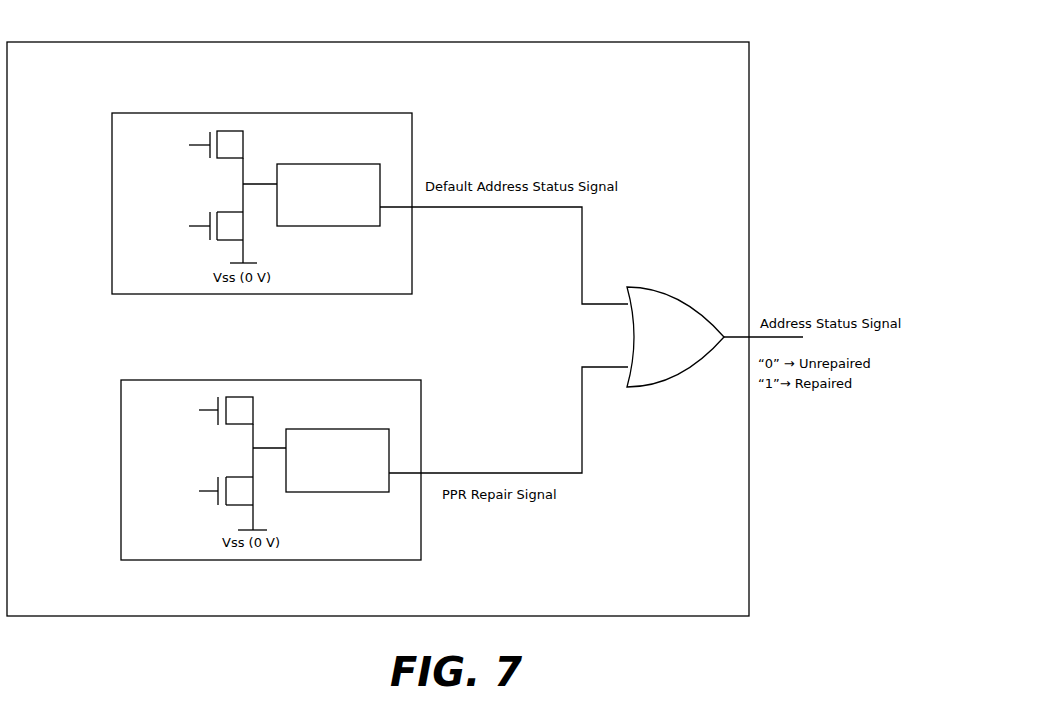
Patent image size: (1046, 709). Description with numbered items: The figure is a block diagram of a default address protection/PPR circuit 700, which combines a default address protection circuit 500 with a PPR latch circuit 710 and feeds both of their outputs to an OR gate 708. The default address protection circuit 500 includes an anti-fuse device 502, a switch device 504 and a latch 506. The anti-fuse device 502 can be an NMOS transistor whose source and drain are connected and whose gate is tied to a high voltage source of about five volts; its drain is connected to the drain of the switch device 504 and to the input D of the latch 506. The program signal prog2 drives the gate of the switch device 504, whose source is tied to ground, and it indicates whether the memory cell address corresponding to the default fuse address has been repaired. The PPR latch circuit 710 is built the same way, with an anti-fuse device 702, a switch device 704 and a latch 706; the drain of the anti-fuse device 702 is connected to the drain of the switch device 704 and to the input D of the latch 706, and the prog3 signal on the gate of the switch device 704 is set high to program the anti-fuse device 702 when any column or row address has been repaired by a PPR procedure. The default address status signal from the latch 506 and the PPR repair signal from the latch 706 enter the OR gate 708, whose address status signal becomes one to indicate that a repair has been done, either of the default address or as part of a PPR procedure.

The default address protection/PPR circuit 700 is at (713, 605).
The default address protection circuit 500 is at (363, 279).
The anti-fuse device 502 is at (222, 117).
The switch device 504 is at (199, 206).
The latch 506 is at (371, 157).
The OR gate 708 is at (688, 346).
The PPR latch circuit 710 is at (373, 544).
The anti-fuse device 702 is at (231, 382).
The switch device 704 is at (206, 472).
The latch 706 is at (383, 424).